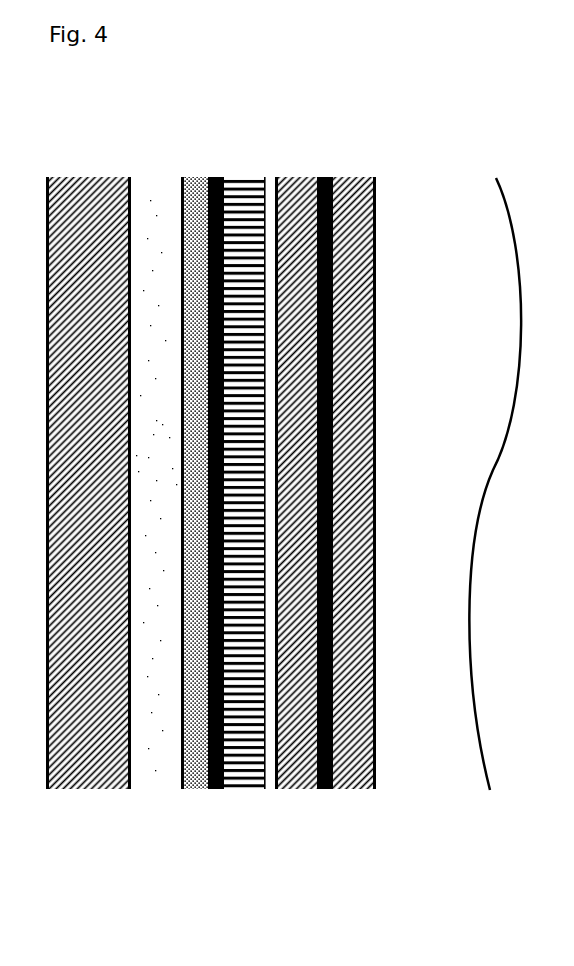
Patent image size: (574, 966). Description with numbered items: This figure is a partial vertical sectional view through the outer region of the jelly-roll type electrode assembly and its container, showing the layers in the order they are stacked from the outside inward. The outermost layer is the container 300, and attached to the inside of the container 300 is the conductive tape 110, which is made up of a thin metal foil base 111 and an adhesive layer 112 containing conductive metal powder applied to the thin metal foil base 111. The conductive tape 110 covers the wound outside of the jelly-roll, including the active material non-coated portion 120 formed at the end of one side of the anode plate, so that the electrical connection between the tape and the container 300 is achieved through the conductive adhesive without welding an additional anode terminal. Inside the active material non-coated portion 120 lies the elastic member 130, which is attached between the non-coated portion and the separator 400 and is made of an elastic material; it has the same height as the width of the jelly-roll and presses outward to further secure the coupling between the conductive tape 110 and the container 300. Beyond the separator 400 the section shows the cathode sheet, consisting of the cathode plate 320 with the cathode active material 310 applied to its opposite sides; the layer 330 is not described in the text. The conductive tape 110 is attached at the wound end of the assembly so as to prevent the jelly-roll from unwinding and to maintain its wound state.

The conductive tape 110 is at (164, 555).
The thin metal foil base 111 is at (149, 760).
The adhesive layer 112 is at (192, 758).
The active material non-coated portion 120 is at (220, 178).
The elastic member 130 is at (253, 763).
The container 300 is at (80, 197).
The cathode active material 310 is at (300, 767).
The cathode plate 320 is at (330, 178).
The second layer 330 is at (350, 767).
The separator 400 is at (268, 190).